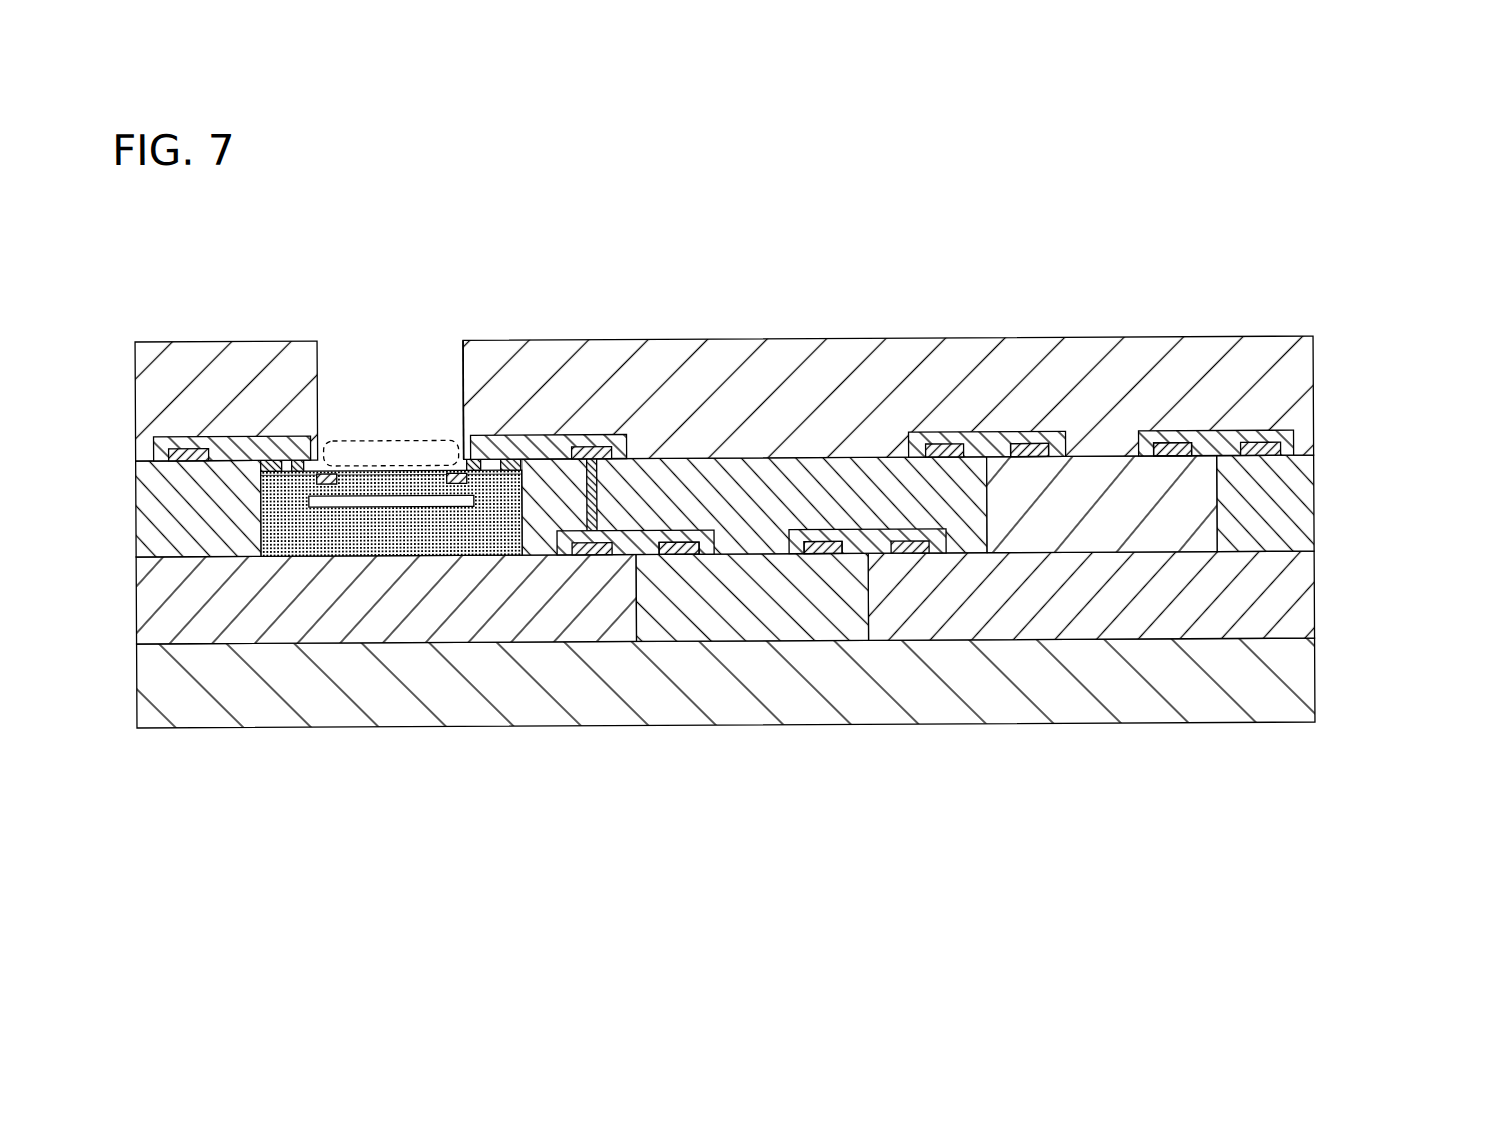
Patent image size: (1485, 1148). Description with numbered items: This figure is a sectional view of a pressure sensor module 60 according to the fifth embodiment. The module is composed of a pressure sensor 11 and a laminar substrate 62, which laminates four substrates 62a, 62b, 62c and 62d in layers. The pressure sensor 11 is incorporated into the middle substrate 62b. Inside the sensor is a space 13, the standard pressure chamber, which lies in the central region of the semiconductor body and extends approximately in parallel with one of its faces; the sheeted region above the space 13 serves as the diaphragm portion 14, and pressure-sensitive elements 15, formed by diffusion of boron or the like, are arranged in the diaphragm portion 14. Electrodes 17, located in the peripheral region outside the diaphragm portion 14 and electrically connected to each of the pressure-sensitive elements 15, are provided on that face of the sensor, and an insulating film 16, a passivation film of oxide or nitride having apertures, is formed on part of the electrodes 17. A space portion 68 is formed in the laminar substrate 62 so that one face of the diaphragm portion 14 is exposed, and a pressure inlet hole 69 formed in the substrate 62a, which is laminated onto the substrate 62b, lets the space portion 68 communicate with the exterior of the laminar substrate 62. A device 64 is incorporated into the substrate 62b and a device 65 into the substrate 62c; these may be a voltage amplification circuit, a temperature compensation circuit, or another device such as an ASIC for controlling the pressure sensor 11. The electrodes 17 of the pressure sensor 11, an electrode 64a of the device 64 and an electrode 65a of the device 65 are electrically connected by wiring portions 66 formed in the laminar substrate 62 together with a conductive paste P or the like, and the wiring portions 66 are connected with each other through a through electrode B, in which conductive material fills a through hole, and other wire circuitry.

The pressure sensor module 60 is at (1084, 230).
The laminar substrate 62 is at (799, 560).
The substrate 62a is at (772, 371).
The substrate 62b is at (773, 520).
The substrate 62c is at (773, 675).
The substrate 62d is at (1305, 677).
The device 64 is at (1018, 535).
The electrode 64a is at (1031, 458).
The device 65 is at (695, 693).
The electrode 65a is at (679, 556).
The wiring portions 66 is at (190, 450).
The space portion 68 is at (392, 440).
The pressure inlet hole 69 is at (465, 385).
The pressure sensor 11 is at (381, 673).
The space 13 is at (383, 488).
The diaphragm portion 14 is at (417, 504).
The pressure-sensitive elements 15 is at (352, 478).
The insulating film 16 is at (272, 472).
The electrodes 17 is at (298, 468).
The conductive paste P is at (244, 450).
The through electrode B is at (691, 389).